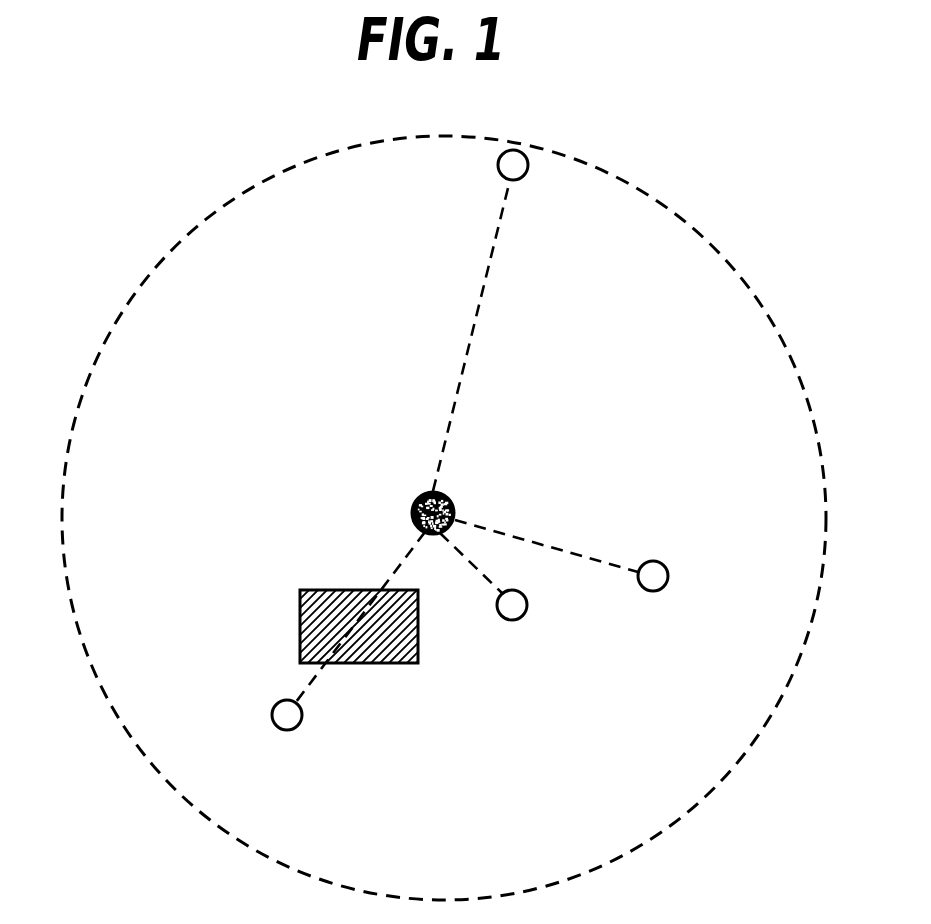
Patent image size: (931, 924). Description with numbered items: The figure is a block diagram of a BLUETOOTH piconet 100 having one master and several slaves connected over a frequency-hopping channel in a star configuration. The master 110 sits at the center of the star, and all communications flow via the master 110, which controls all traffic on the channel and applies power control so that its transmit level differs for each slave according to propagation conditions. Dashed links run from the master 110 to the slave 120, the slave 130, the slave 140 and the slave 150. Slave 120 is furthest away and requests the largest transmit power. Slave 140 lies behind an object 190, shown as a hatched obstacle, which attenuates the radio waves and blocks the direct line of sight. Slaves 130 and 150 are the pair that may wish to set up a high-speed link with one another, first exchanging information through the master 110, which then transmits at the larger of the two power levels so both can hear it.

The piconet 100 is at (132, 236).
The master 110 is at (452, 501).
The slave 120 is at (524, 176).
The slave 130 is at (514, 620).
The slave 140 is at (292, 729).
The slave 150 is at (655, 591).
The object 190 is at (338, 590).